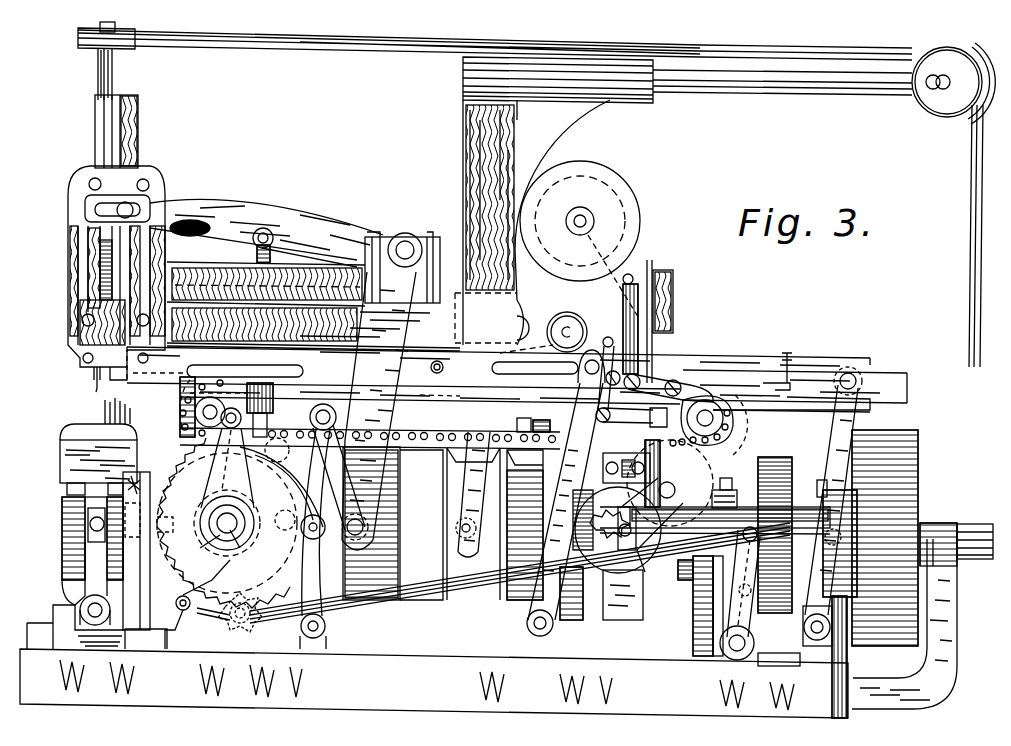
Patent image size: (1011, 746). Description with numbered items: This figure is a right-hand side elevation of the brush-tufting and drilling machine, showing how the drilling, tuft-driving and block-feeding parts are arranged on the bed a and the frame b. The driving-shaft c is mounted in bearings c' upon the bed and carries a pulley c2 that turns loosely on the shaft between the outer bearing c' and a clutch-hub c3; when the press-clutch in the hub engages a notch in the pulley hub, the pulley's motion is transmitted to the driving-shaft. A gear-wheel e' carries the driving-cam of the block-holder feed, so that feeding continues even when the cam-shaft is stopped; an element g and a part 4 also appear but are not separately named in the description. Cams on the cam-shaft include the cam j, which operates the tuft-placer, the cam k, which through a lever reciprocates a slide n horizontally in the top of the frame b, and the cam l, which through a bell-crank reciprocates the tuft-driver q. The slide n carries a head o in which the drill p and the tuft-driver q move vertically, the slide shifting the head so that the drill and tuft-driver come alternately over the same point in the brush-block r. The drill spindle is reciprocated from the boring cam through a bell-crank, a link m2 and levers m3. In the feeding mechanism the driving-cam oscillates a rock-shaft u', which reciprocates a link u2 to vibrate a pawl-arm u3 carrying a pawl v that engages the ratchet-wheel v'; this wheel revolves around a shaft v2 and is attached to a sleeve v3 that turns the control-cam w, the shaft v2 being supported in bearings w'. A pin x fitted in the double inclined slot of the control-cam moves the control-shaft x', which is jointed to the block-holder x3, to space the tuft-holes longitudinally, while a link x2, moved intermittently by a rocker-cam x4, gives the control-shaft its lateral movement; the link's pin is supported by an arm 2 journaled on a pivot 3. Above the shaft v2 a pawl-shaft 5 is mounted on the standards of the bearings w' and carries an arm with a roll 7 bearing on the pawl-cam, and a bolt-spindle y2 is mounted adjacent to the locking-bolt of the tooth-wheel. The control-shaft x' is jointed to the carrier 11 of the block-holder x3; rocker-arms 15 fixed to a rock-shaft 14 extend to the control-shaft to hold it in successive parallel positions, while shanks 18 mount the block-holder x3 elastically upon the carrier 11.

The bed a is at (27, 676).
The frame b is at (498, 461).
The driving-shaft c is at (922, 599).
The bearings c' is at (938, 528).
The pulley c2 is at (885, 538).
The clutch-hub c3 is at (828, 474).
The gear-wheel e' is at (735, 540).
The cam g is at (687, 460).
The cam j is at (545, 535).
The cam k is at (473, 516).
The cam l is at (393, 523).
The link m2 is at (221, 241).
The levers m3 is at (335, 235).
The slide n is at (445, 245).
The head o is at (68, 268).
The drill p is at (93, 379).
The tuft-driver q is at (112, 386).
The brush-block r is at (60, 432).
The rock-shaft u' is at (637, 505).
The link u2 is at (640, 560).
The pawl-arm u3 is at (187, 578).
The pawl v is at (233, 615).
The ratchet-wheel v' is at (202, 420).
The shaft v2 is at (224, 518).
The sleeve v3 is at (240, 548).
The control-cam w is at (261, 510).
The bearings w' is at (321, 650).
The pin x is at (99, 551).
The control-shaft x' is at (60, 543).
The link x2 is at (148, 540).
The block-holder x3 is at (65, 458).
The rocker-cam x4 is at (378, 525).
The bolt-spindle y2 is at (167, 622).
The arm 2 is at (352, 614).
The pivot 3 is at (42, 633).
The rod 4 is at (197, 614).
The pawl-shaft 5 is at (220, 420).
The roll 7 is at (227, 468).
The carrier 11 is at (72, 506).
The rock-shaft 14 is at (80, 612).
The rocker-arms 15 is at (97, 580).
The shanks 18 is at (68, 488).